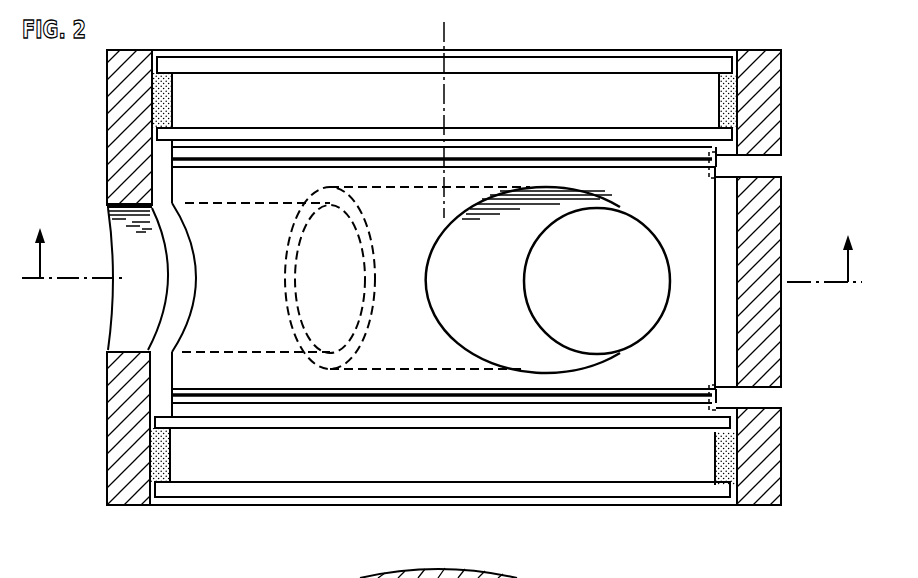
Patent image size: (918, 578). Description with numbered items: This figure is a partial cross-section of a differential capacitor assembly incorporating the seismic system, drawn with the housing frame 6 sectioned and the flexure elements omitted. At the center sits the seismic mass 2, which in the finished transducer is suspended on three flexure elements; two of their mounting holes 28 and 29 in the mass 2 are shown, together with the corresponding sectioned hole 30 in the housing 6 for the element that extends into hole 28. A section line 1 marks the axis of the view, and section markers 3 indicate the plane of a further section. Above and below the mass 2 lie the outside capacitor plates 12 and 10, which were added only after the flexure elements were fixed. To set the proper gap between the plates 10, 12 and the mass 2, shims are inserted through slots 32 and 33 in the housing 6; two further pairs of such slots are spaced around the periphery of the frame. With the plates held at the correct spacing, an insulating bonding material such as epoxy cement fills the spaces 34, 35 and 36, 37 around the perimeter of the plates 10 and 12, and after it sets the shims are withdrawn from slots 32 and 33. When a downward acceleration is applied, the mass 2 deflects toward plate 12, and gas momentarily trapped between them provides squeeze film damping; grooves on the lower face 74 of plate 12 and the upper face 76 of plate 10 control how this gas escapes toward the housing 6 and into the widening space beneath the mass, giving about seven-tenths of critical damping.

The section line 1 is at (447, 30).
The seismic mass 2 is at (668, 205).
The section line 3 is at (442, 244).
The housing frame 6 is at (763, 320).
The capacitor plate 10 is at (534, 468).
The capacitor plate 12 is at (534, 107).
The mounting hole 28 is at (210, 205).
The mounting hole 29 is at (488, 299).
The sectioned hole 30 is at (120, 342).
The slot 32 is at (769, 397).
The slot 33 is at (772, 168).
The space 34 is at (720, 457).
The space 35 is at (162, 455).
The space 36 is at (724, 100).
The space 37 is at (166, 103).
The lower face 74 is at (288, 158).
The upper face 76 is at (274, 398).